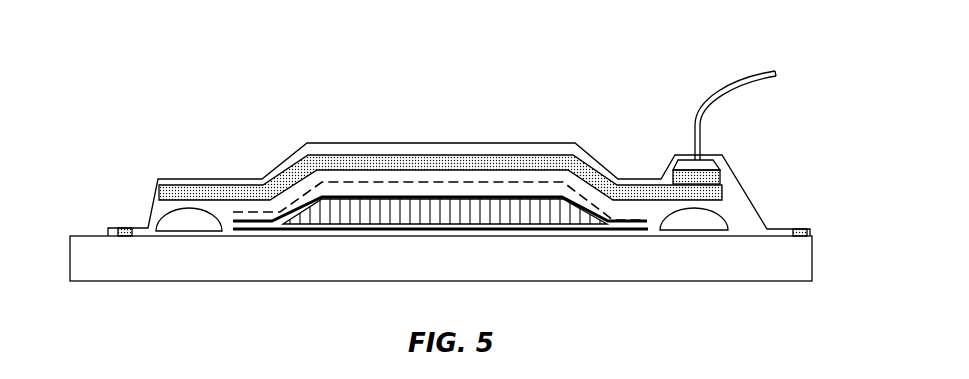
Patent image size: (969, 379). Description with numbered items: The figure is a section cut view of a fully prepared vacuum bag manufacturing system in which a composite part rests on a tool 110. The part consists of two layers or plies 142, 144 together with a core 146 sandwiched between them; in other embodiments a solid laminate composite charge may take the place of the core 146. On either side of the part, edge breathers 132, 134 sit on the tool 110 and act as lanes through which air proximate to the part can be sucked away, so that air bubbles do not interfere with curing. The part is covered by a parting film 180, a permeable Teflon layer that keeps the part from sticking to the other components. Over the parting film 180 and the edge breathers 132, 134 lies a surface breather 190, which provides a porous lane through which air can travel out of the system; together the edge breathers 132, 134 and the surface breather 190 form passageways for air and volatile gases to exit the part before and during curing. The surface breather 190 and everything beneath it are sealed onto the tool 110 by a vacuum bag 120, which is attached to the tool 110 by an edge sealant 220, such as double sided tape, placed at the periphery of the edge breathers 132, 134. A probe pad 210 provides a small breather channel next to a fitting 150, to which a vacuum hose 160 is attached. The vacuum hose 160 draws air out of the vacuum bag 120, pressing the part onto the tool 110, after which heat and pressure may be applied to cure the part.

The tool 110 is at (373, 282).
The vacuum bag 120 is at (398, 143).
The edge breather 132 is at (755, 211).
The edge breather 134 is at (158, 218).
The layer/ply 142 is at (641, 222).
The layer/ply 144 is at (632, 231).
The core 146 is at (481, 213).
The fitting 150 is at (712, 163).
The vacuum hose 160 is at (713, 92).
The parting film 180 is at (290, 204).
The surface breather 190 is at (197, 184).
The probe pad 210 is at (715, 178).
The edge sealant 220 is at (108, 232).